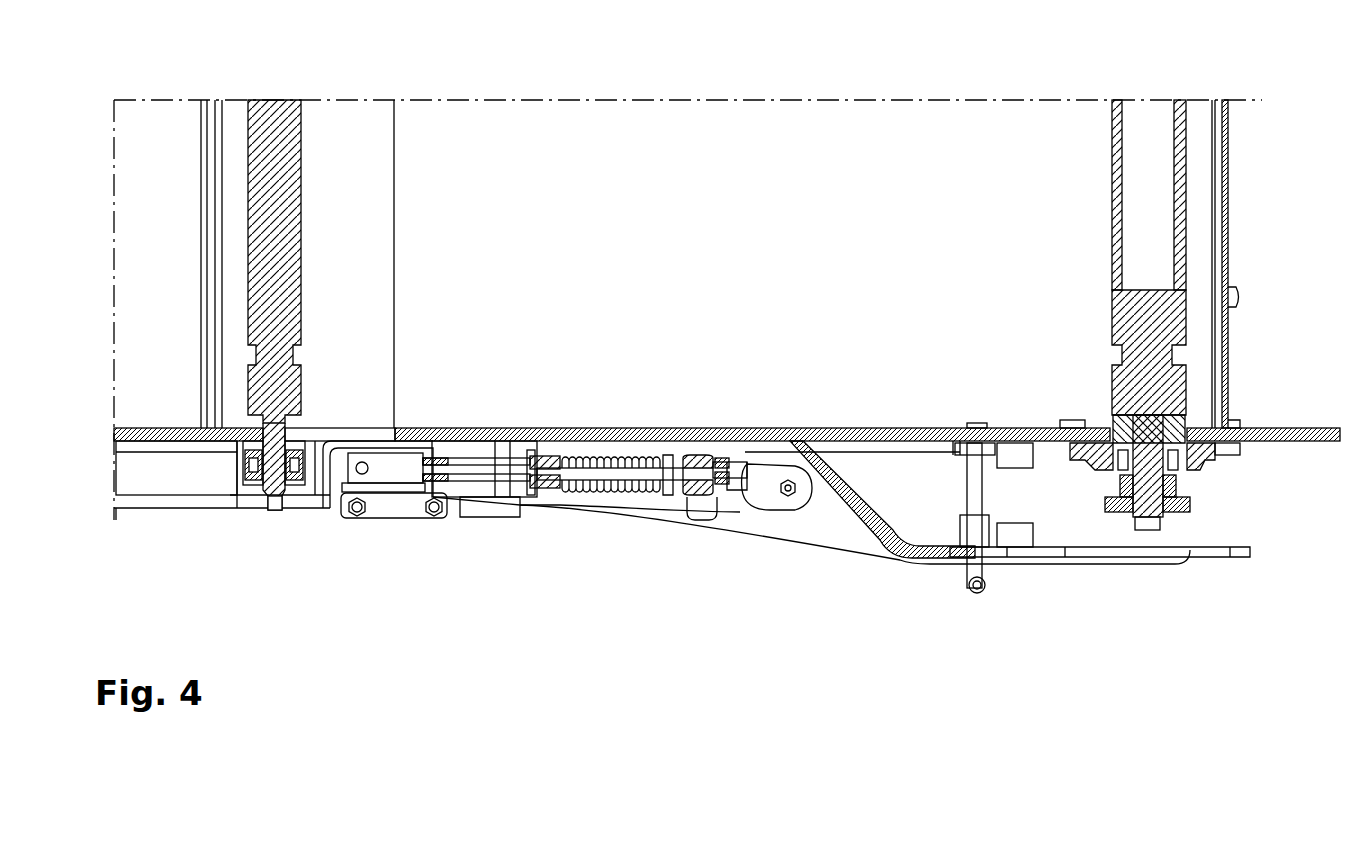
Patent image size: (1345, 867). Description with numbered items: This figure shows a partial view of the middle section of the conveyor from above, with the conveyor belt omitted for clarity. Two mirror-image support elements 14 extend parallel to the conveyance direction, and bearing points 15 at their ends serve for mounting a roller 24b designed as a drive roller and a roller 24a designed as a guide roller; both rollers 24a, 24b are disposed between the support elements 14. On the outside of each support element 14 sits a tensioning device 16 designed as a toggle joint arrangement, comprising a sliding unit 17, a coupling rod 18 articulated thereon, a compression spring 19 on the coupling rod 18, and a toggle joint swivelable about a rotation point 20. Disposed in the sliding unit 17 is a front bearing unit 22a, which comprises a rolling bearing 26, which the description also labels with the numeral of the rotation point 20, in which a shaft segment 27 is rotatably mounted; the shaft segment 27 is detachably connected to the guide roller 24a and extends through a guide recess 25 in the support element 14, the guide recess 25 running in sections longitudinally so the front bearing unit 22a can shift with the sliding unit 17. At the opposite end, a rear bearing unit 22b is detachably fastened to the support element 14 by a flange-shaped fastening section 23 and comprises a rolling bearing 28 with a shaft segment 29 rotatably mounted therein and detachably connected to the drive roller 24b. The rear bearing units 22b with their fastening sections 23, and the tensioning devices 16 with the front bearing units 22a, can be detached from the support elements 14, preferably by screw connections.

The support element 14 is at (1290, 428).
The bearing point 15 is at (288, 530).
The tensioning device 16 is at (632, 500).
The sliding unit 17 is at (332, 500).
The coupling rod 18 is at (515, 470).
The compression spring 19 is at (636, 466).
The rotation point 20 is at (788, 482).
The front bearing unit 22a is at (245, 440).
The rear bearing unit 22b is at (1190, 478).
The fastening section 23 is at (1075, 458).
The roller designed as guide roller 24a is at (278, 120).
The roller designed as drive roller 24b is at (1180, 210).
The guide recess 25 is at (338, 440).
The bearing ring 26 is at (250, 493).
The shaft segment 27 is at (262, 500).
The rolling bearing 28 is at (1117, 475).
The shaft segment 29 is at (1142, 507).